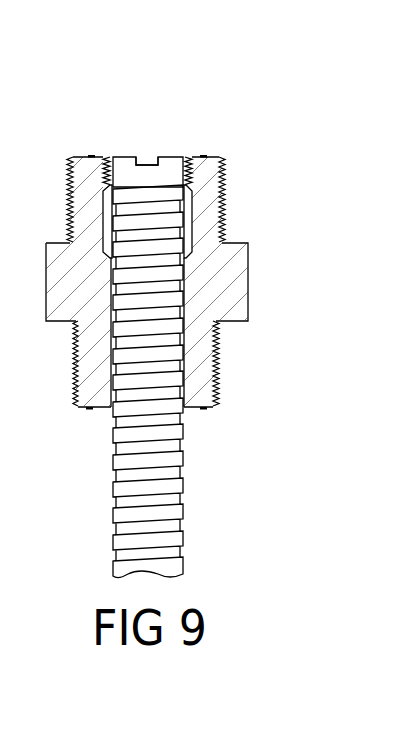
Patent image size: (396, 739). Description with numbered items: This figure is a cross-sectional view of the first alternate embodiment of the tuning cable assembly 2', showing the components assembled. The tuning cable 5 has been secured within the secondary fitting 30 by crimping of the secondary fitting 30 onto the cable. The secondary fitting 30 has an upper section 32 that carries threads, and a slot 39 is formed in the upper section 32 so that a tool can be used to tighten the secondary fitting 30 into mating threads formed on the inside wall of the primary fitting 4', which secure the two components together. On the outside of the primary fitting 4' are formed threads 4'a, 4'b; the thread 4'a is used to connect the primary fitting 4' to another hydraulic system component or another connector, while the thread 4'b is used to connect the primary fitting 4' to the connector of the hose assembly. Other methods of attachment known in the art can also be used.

The tuning cable assembly 2' is at (147, 225).
The secondary fitting 30 is at (119, 147).
The upper section 32 is at (173, 163).
The slot 39 is at (141, 150).
The primary fitting 4' is at (198, 280).
The thread 4'a is at (174, 199).
The thread 4'b is at (180, 363).
The tuning cable 5 is at (120, 495).